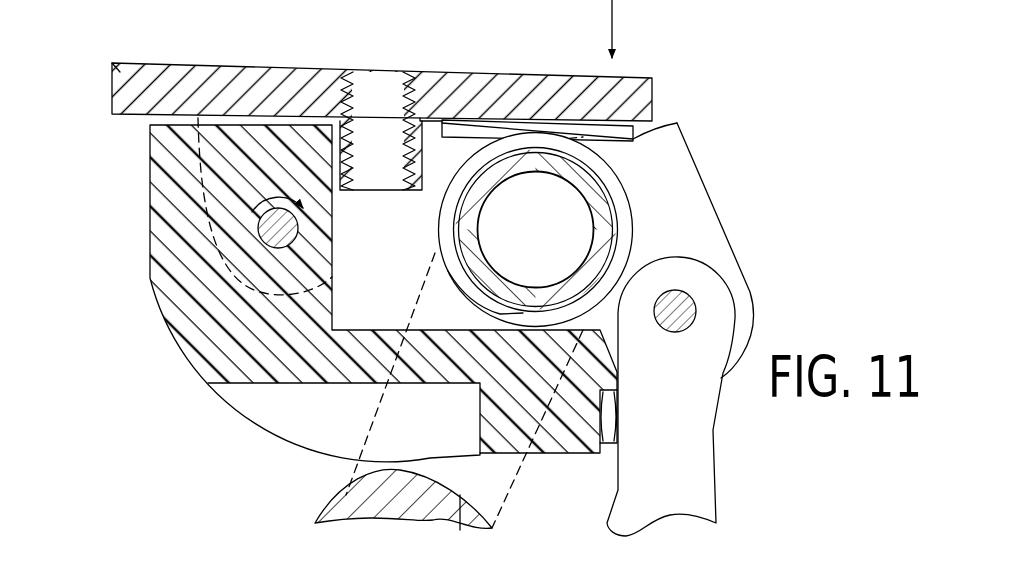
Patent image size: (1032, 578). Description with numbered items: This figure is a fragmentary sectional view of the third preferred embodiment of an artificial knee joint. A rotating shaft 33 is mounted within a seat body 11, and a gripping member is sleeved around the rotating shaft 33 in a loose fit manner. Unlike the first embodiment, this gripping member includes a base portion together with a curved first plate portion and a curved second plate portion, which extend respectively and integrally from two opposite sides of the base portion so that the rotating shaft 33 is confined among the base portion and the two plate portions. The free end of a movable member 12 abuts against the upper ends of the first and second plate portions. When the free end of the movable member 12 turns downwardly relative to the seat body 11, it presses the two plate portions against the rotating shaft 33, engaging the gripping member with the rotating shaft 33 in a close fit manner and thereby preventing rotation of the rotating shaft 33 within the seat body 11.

The seat body 11 is at (165, 333).
The movable member 12 is at (105, 96).
The rotating shaft 33 is at (528, 160).